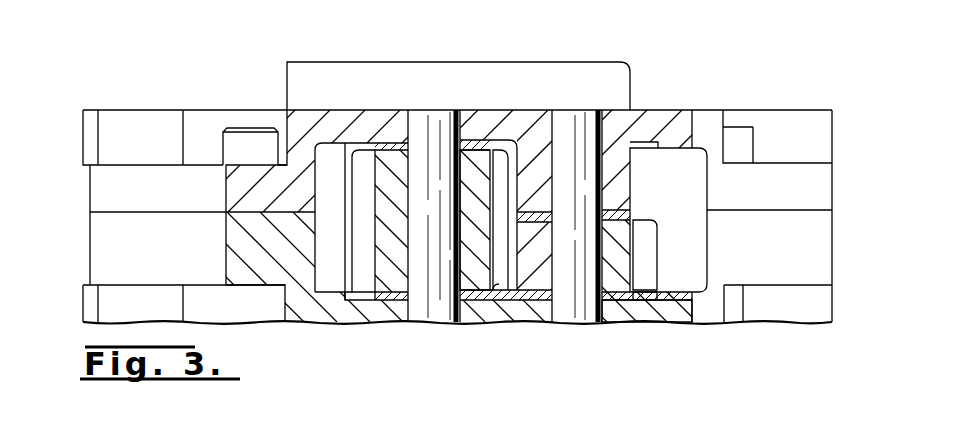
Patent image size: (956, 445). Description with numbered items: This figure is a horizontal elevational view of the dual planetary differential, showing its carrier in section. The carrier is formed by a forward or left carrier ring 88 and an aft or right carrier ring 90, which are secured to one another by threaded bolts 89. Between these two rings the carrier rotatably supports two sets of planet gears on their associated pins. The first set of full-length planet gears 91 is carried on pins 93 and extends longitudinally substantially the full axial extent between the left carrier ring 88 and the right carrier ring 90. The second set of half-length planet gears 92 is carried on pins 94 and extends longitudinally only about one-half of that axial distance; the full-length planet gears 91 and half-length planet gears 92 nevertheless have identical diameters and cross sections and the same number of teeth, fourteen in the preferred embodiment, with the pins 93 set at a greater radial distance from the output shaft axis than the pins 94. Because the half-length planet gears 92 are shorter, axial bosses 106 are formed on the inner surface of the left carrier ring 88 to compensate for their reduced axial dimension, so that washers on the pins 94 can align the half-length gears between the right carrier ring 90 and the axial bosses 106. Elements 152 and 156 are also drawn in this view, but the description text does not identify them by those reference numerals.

The left carrier ring 88 is at (679, 108).
The threaded bolts 89 is at (232, 140).
The right carrier ring 90 is at (656, 320).
The full-length planet gears 91 is at (360, 295).
The half-length planet gears 92 is at (538, 262).
The pins 93 is at (428, 120).
The pins 94 is at (574, 118).
The axial bosses 106 is at (638, 184).
The piston sleeve 152 is at (357, 155).
The sleeve insert 156 is at (646, 240).